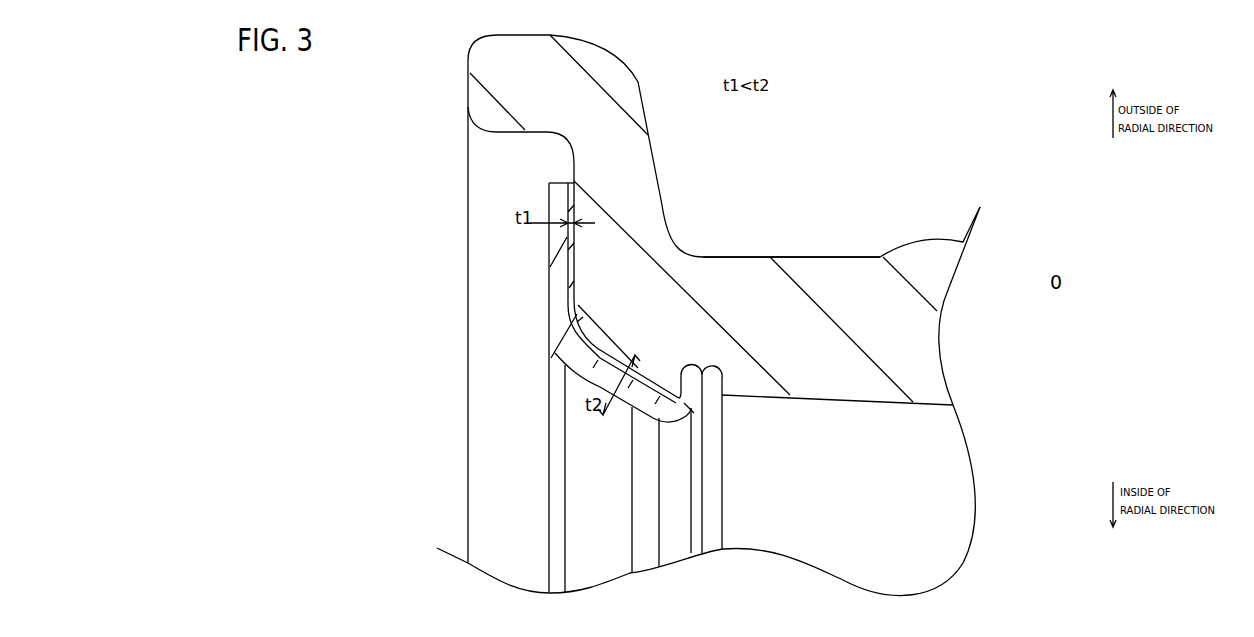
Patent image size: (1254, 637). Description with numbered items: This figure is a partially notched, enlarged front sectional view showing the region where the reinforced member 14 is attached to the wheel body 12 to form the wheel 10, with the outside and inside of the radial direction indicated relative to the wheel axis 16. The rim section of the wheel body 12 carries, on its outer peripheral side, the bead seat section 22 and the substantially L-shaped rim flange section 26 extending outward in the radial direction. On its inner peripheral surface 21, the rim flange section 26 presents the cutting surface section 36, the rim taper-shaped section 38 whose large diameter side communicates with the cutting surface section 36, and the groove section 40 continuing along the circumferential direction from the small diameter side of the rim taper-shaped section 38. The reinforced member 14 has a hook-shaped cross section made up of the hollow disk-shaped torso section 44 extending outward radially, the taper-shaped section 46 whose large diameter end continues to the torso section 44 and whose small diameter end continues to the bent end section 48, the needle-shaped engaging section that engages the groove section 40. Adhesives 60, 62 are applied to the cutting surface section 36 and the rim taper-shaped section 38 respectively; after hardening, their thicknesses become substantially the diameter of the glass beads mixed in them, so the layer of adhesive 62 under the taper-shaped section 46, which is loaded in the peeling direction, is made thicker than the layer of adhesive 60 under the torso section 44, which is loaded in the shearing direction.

The wheel 10 is at (856, 157).
The wheel body 12 is at (1066, 182).
The reinforced member 14 is at (588, 520).
The wheel axis 16 is at (1066, 530).
The inner peripheral surface 21 is at (823, 398).
The bead seat section 22 is at (742, 257).
The rim flange section 26 is at (493, 62).
The cutting surface section 36 is at (567, 193).
The rim taper-shaped section 38 is at (660, 406).
The groove section 40 is at (712, 378).
The torso section 44 is at (550, 250).
The taper-shaped section 46 is at (608, 336).
The bent end section 48 is at (700, 364).
The adhesive 60 is at (580, 270).
The adhesive 62 is at (636, 402).